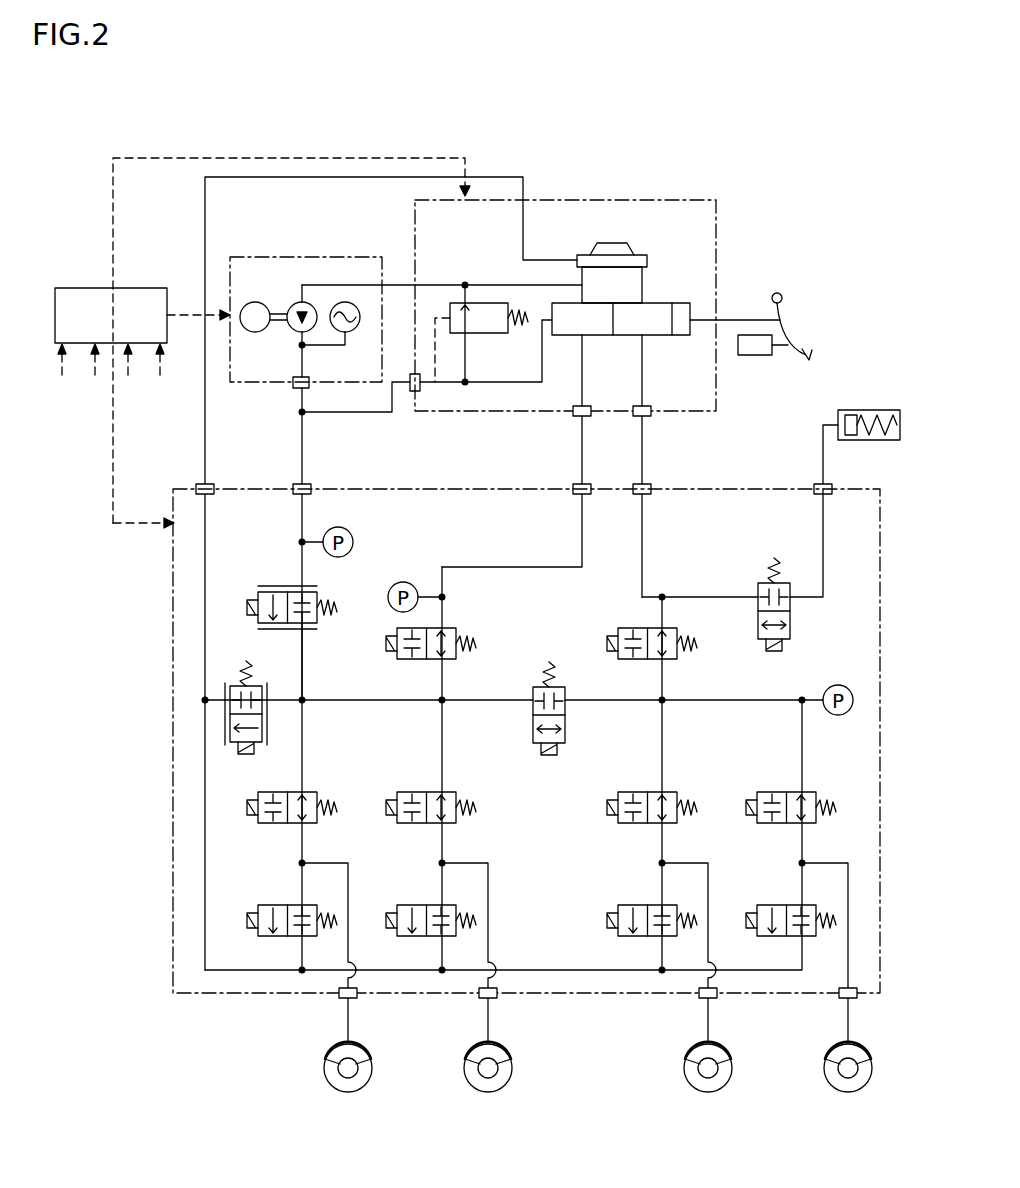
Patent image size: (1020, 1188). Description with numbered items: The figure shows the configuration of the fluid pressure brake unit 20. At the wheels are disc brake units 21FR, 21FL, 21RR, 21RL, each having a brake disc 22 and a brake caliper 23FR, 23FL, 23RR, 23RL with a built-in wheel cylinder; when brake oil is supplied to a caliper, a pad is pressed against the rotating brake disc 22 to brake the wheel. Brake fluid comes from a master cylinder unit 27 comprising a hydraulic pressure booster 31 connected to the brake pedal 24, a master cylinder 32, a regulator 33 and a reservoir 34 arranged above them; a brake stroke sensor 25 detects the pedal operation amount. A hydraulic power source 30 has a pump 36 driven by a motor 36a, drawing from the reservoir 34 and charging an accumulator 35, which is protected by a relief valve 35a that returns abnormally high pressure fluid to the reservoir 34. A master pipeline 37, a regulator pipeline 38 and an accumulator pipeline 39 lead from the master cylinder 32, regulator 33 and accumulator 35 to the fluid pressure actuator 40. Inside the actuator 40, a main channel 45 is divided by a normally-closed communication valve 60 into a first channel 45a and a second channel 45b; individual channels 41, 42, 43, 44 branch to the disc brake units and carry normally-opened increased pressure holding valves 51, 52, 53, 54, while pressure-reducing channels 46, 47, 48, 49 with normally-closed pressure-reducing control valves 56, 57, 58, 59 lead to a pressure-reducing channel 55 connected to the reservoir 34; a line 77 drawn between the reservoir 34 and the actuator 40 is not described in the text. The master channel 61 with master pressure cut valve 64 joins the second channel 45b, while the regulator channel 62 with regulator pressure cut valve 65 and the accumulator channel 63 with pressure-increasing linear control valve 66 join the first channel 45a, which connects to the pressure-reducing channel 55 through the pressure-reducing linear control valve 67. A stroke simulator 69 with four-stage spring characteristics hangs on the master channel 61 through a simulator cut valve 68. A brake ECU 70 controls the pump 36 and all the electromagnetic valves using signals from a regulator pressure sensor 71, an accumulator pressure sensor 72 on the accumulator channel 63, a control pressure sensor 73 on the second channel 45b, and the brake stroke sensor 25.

The fluid pressure brake unit 20 is at (768, 148).
The disc brake unit 21RR is at (308, 1084).
The disc brake unit 21RL is at (454, 1088).
The disc brake unit 21FR is at (668, 1084).
The disc brake unit 21FL is at (814, 1088).
The brake disc 22 is at (345, 1092).
The brake caliper 23RR is at (334, 1048).
The brake caliper 23RL is at (474, 1048).
The brake caliper 23FR is at (694, 1048).
The brake caliper 23FL is at (834, 1048).
The brake pedal 24 is at (811, 350).
The brake stroke sensor 25 is at (757, 384).
The master cylinder unit 27 is at (674, 200).
The hydraulic power source 30 is at (302, 257).
The hydraulic pressure booster 31 is at (676, 302).
The master cylinder 32 is at (629, 338).
The regulator 33 is at (572, 338).
The reservoir 34 is at (617, 249).
The accumulator 35 is at (352, 334).
The relief valve 35a is at (480, 335).
The pump 36 is at (286, 330).
The motor 36a is at (255, 303).
The master pipeline 37 is at (648, 450).
The regulator pipeline 38 is at (577, 450).
The accumulator pipeline 39 is at (307, 450).
The fluid pressure actuator 40 is at (846, 490).
The individual channel 41 is at (684, 864).
The individual channel 42 is at (822, 864).
The individual channel 43 is at (319, 864).
The individual channel 44 is at (462, 864).
The main channel 45 is at (716, 692).
The first channel 45a is at (702, 700).
The second channel 45b is at (342, 700).
The pressure-reducing channel 46 is at (658, 889).
The pressure-reducing channel 47 is at (796, 889).
The pressure-reducing channel 48 is at (296, 889).
The pressure-reducing channel 49 is at (436, 889).
The increased pressure holding valve 51 is at (677, 792).
The increased pressure holding valve 52 is at (817, 792).
The increased pressure holding valve 53 is at (317, 792).
The increased pressure holding valve 54 is at (457, 792).
The pressure-reducing channel 55 is at (238, 970).
The pressure-reducing control valve 56 is at (614, 906).
The pressure-reducing control valve 57 is at (756, 906).
The pressure-reducing control valve 58 is at (254, 906).
The pressure-reducing control valve 59 is at (394, 906).
The communication valve 60 is at (570, 710).
The master channel 61 is at (648, 553).
The regulator channel 62 is at (524, 568).
The accumulator channel 63 is at (307, 667).
The master pressure cut valve 64 is at (682, 626).
The regulator pressure cut valve 65 is at (476, 644).
The pressure-increasing linear control valve 66 is at (337, 606).
The pressure-reducing linear control valve 67 is at (246, 668).
The simulator cut valve 68 is at (795, 610).
The stroke simulator 69 is at (866, 410).
The brake ECU 70 is at (95, 288).
The regulator pressure sensor 71 is at (416, 561).
The accumulator pressure sensor 72 is at (370, 523).
The control pressure sensor 73 is at (844, 688).
The reservoir pipe 77 is at (200, 450).